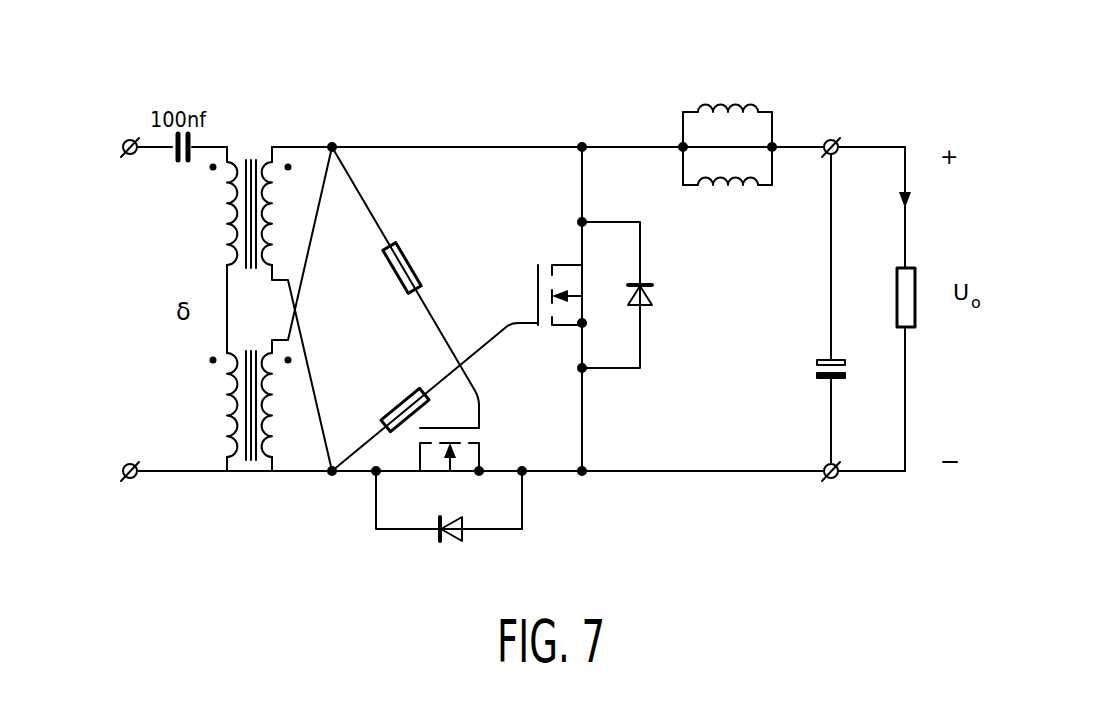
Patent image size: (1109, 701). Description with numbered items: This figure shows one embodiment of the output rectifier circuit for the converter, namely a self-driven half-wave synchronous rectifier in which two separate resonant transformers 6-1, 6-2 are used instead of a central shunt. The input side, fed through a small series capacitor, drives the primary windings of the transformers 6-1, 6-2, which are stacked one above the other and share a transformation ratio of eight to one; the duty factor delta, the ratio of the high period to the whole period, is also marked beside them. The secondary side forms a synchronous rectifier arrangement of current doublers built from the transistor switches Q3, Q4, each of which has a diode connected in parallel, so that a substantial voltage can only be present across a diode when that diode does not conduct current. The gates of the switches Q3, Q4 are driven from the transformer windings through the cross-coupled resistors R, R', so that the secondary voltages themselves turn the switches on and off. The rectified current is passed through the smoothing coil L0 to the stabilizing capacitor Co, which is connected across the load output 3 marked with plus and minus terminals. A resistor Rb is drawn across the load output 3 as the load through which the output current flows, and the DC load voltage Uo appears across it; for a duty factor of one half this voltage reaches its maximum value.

The resonant transformer 6-1 is at (256, 92).
The resonant transformer 6-2 is at (257, 488).
The load output 3 is at (836, 137).
The gate resistor R is at (405, 287).
The gate resistor R' is at (435, 397).
The transistor switch Q3 is at (481, 450).
The transistor switch Q4 is at (538, 282).
The output inductor L0 is at (727, 145).
The stabilizing capacitor Co is at (815, 368).
The load resistor Rb is at (897, 305).